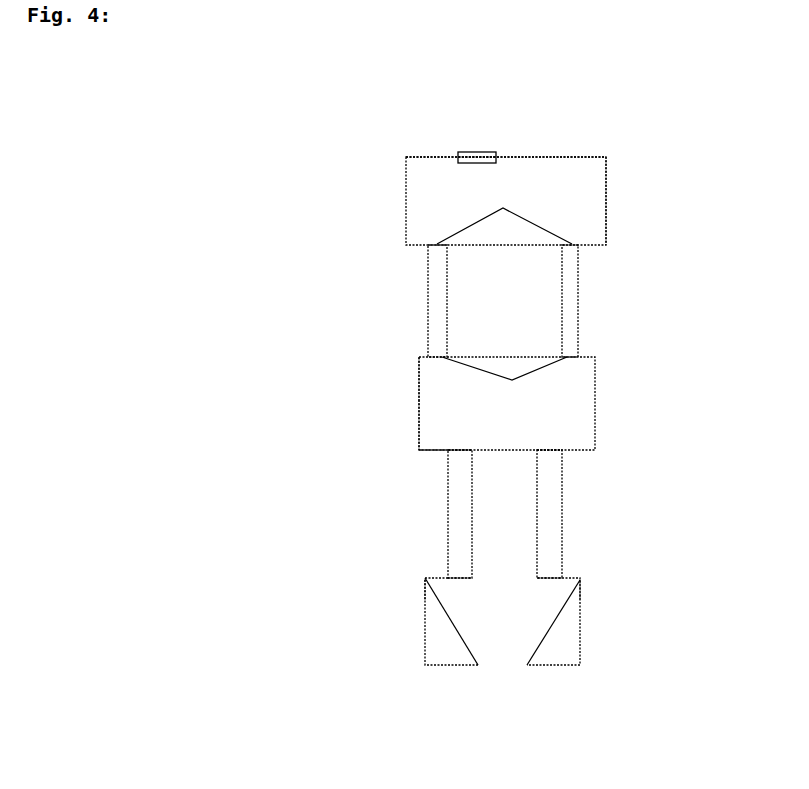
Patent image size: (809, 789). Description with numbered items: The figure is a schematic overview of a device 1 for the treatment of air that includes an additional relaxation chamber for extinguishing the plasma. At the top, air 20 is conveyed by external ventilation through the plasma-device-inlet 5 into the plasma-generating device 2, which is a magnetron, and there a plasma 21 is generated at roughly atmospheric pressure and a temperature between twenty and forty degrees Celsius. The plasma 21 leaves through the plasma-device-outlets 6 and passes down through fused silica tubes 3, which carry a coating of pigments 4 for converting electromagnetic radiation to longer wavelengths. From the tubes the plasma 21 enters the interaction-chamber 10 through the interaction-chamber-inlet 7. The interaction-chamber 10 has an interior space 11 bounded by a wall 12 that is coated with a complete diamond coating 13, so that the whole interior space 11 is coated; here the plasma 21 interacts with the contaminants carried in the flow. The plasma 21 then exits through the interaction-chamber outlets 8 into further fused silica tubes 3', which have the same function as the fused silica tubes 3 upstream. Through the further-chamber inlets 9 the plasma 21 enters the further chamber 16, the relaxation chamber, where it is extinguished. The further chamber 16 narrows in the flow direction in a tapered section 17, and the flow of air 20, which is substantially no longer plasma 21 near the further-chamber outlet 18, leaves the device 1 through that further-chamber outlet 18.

The device for the treatment of air 1 is at (508, 86).
The plasma-generating device 2 is at (523, 157).
The plasma 21 is at (585, 210).
The plasma-device-inlet 5 is at (458, 152).
The air 20 is at (478, 144).
The plasma-device-outlets 6 is at (504, 216).
The fused silica tubes 3 is at (494, 301).
The pigments 4 is at (558, 334).
The interior space 11 is at (587, 405).
The wall 12 is at (419, 395).
The diamond coating 13 is at (419, 423).
The interaction-chamber-inlet 7 is at (504, 381).
The interaction-chamber 10 is at (428, 451).
The further fused silica tubes 3' is at (505, 514).
The interaction-chamber outlets 8 is at (538, 450).
The further-chamber inlets 9 is at (538, 578).
The further chamber 16 is at (565, 587).
The tapered section 17 is at (567, 600).
The further-chamber outlet 18 is at (500, 667).